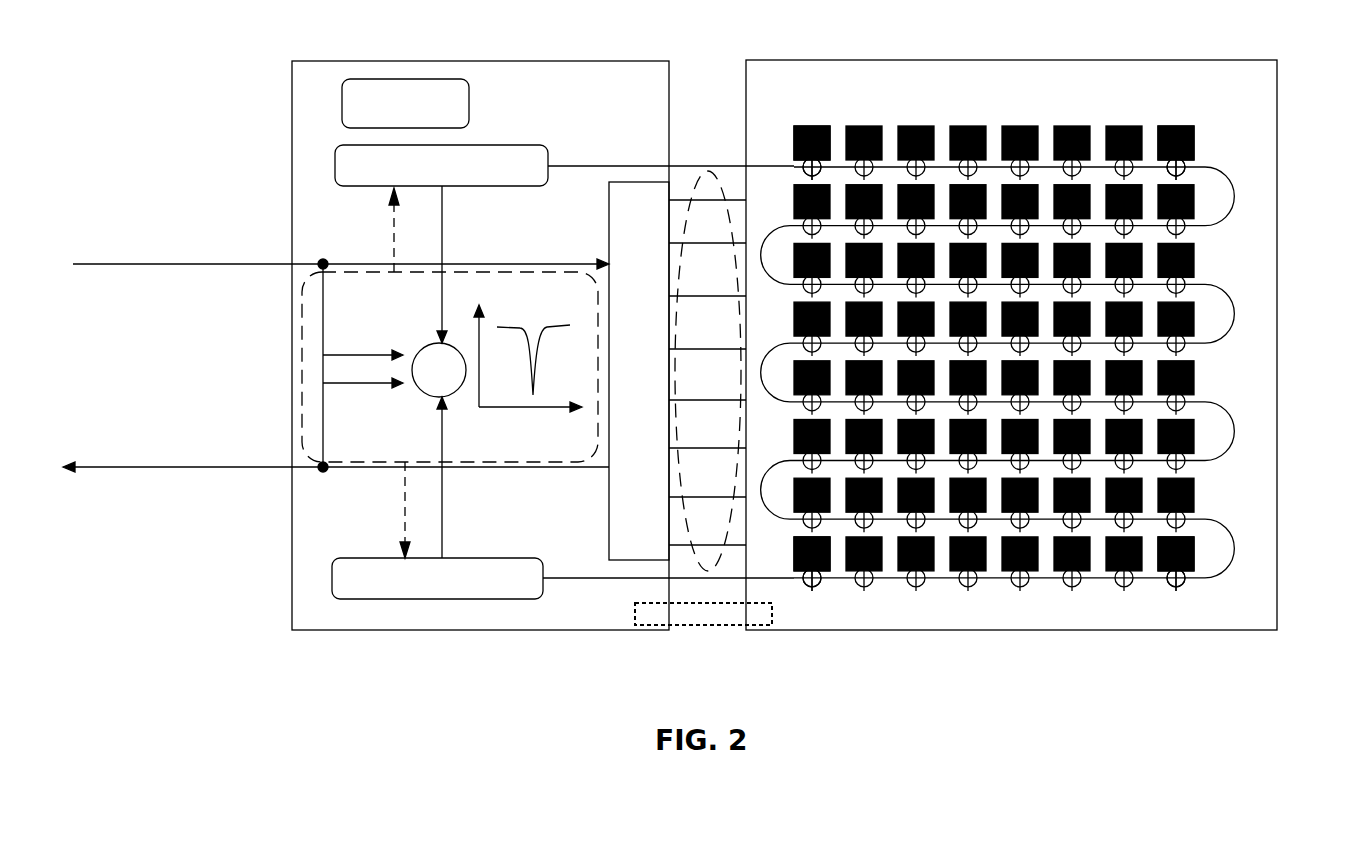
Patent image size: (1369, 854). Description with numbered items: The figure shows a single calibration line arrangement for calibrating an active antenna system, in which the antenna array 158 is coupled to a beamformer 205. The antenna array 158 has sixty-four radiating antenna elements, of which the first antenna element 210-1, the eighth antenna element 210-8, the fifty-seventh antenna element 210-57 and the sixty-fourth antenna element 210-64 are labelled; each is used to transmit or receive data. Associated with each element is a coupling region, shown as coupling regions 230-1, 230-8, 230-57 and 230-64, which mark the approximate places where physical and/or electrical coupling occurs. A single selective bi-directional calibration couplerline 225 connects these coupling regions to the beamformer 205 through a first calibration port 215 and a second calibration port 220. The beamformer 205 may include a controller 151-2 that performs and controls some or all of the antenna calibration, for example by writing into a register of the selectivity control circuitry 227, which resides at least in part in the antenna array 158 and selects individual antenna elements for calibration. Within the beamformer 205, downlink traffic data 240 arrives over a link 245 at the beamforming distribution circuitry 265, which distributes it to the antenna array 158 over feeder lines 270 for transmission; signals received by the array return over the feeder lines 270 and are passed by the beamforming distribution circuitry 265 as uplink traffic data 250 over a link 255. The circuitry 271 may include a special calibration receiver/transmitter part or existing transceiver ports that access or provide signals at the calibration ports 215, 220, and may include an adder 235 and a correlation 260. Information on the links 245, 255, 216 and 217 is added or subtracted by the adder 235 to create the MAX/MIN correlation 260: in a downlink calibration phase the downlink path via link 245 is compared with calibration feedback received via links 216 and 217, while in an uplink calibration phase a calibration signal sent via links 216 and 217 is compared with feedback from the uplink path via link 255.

The controller 151-2 is at (365, 85).
The beamformer 205 is at (573, 55).
The feeder lines 270 is at (690, 183).
The selective bi-directional calibration couplerline 225 is at (605, 155).
The antenna array 158 is at (1188, 72).
The antenna element E1 210-1 is at (836, 121).
The coupling region 230-1 is at (803, 165).
The antenna element E8 210-8 is at (1193, 147).
The coupling region 230-8 is at (1187, 165).
The downlink traffic data 240 is at (170, 235).
The link 245 is at (218, 264).
The beamforming distribution circuitry 265 is at (600, 230).
The calibration port 215 is at (485, 187).
The link 216 is at (442, 208).
The circuitry 271 is at (300, 337).
The adder 235 is at (423, 345).
The MAX/MIN correlation 260 is at (523, 327).
The uplink traffic data 250 is at (163, 438).
The link 255 is at (195, 467).
The calibration port 220 is at (383, 558).
The link 217 is at (439, 482).
The antenna element E57 210-57 is at (800, 566).
The coupling region 230-57 is at (828, 593).
The antenna element E64 210-64 is at (1195, 543).
The coupling region 230-64 is at (1170, 581).
The selectivity control circuitry 227 is at (698, 628).